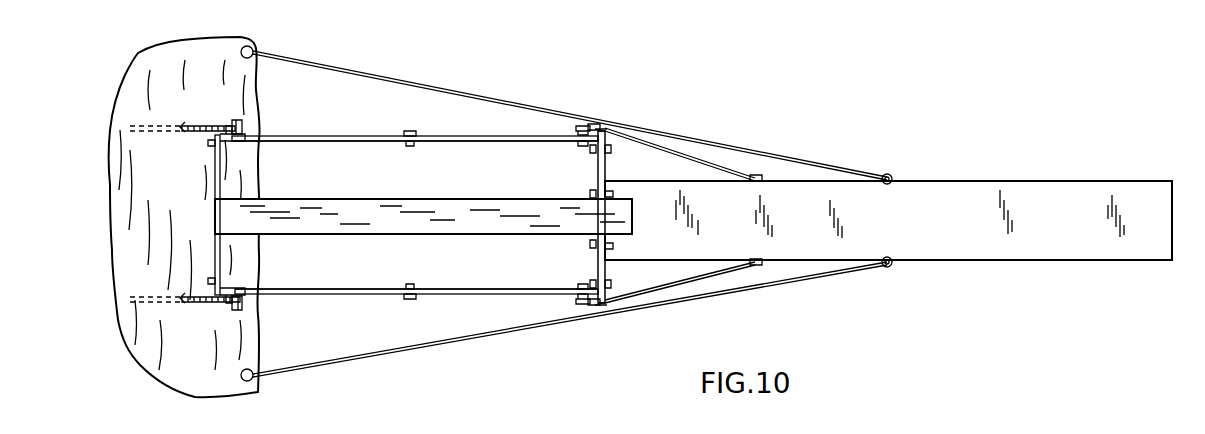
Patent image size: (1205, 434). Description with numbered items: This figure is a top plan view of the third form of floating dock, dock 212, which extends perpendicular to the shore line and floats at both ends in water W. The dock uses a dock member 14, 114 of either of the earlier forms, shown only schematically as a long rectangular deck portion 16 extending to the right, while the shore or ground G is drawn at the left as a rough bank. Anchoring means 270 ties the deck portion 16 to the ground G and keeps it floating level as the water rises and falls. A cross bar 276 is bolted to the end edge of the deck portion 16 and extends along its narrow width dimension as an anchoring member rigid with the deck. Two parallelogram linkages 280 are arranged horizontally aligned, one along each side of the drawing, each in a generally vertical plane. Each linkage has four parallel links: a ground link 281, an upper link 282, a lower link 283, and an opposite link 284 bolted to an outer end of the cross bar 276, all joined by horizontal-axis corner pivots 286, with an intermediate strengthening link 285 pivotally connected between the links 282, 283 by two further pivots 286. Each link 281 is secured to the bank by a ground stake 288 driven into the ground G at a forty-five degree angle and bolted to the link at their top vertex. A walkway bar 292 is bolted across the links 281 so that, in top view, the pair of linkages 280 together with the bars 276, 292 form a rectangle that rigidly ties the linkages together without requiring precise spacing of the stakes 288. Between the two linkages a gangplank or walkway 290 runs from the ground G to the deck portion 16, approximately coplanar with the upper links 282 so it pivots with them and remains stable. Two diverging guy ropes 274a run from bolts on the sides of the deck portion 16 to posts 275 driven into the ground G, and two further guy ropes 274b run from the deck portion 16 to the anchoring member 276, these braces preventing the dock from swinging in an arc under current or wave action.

The dock member 14 is at (1015, 181).
The dock member 114 is at (888, 220).
The deck portion 16 is at (1055, 260).
The dock 212 is at (912, 140).
The anchoring means 270 is at (598, 329).
The guy rope 274a is at (484, 102).
The guy rope 274b is at (686, 152).
The post 275 is at (253, 52).
The cross bar 276 is at (598, 268).
The parallelogram linkage 280 is at (350, 122).
The link 281 is at (246, 134).
The link 282 is at (302, 141).
The link 283 is at (280, 288).
The link 284 is at (580, 126).
The intermediate strengthening link 285 is at (416, 133).
The pivot 286 is at (236, 120).
The ground stake 288 is at (212, 125).
The walkway 290 is at (464, 234).
The walkway bar 292 is at (213, 178).
The ground G is at (148, 352).
The water W is at (880, 290).